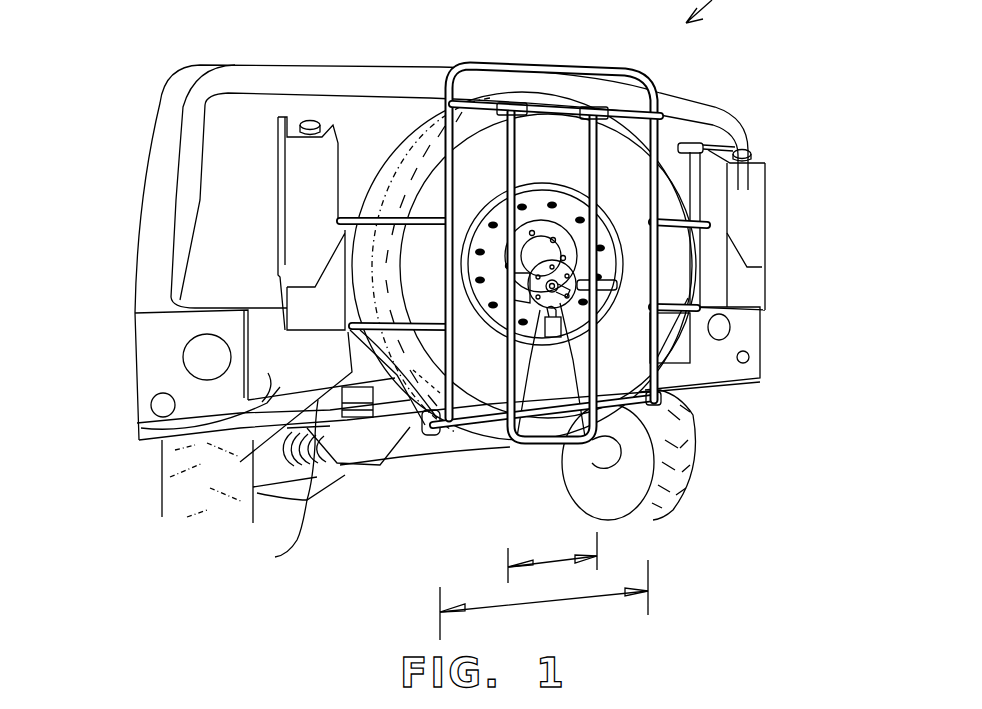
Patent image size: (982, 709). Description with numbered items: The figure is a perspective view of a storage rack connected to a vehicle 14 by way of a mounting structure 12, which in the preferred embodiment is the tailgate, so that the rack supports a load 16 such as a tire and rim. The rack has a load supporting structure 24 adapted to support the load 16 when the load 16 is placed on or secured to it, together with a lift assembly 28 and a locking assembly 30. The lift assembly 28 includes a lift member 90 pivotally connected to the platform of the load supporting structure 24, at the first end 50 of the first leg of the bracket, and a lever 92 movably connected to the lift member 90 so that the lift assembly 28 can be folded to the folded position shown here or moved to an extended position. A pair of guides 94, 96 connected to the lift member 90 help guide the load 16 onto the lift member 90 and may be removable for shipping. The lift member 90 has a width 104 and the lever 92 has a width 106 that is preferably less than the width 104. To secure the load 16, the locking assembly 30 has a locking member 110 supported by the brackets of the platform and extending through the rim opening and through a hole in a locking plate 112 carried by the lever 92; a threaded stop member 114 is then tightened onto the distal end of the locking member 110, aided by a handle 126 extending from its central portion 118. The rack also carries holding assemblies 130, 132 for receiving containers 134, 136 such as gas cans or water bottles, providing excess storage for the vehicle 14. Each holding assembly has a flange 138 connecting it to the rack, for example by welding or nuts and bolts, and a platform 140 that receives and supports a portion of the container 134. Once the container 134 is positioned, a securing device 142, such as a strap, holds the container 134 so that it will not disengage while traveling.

The mounting structure 12 is at (137, 421).
The vehicle 14 is at (135, 353).
The load 16 is at (404, 152).
The load supporting structure 24 is at (420, 463).
The lift assembly 28 is at (442, 430).
The locking assembly 30 is at (527, 448).
The first end 50 is at (697, 432).
The lift member 90 is at (637, 82).
The lever 92 is at (518, 132).
The guide 94 is at (707, 380).
The guide 96 is at (340, 218).
The width 104 is at (537, 603).
The width 106 is at (552, 558).
The locking member 110 is at (583, 292).
The locking plate 112 is at (577, 262).
The stop member 114 is at (578, 260).
The central portion 118 is at (570, 447).
The handle 126 is at (583, 280).
The holding assembly 130 is at (280, 287).
The holding assembly 132 is at (752, 293).
The container 134 is at (338, 127).
The container 136 is at (760, 162).
The flange 138 is at (275, 557).
The platform 140 is at (165, 488).
The securing device 142 is at (278, 132).